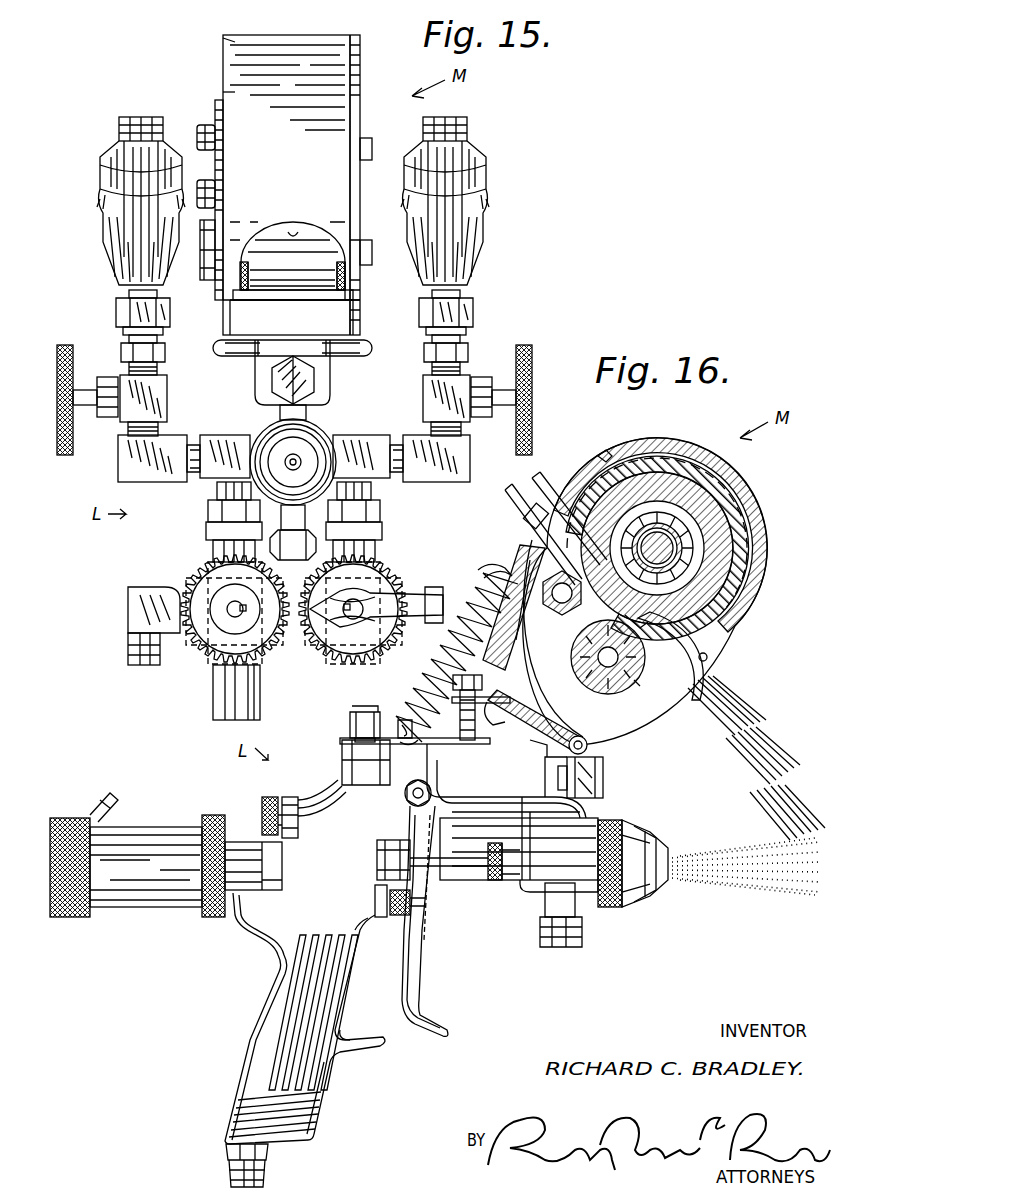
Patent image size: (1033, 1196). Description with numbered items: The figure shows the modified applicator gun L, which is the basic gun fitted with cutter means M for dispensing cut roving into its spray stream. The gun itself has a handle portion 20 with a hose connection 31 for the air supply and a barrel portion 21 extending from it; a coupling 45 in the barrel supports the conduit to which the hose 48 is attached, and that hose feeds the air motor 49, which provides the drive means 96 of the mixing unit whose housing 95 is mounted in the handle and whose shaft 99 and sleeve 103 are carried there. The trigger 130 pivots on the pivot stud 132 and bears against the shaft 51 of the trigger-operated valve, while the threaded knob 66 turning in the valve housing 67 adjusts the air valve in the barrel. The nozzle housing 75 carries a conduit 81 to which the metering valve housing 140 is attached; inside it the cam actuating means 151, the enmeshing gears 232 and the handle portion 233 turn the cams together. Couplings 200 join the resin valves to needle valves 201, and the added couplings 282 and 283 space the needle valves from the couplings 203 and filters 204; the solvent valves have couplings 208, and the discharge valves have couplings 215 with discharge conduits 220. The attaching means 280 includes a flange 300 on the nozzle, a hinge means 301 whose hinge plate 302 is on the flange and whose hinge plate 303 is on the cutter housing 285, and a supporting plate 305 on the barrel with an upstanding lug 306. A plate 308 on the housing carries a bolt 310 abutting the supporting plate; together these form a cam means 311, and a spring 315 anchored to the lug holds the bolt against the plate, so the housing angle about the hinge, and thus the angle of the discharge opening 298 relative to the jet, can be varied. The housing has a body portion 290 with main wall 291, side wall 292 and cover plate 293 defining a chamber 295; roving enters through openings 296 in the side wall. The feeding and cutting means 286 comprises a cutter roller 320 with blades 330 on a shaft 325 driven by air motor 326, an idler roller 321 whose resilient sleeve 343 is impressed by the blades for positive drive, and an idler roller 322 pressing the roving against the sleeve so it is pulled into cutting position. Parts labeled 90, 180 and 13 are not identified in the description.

In FIG. 15, the housing 285 is at (213, 70).
In FIG. 16, the housing 285 is at (668, 434).
In FIG. 15, the side wall 292 is at (220, 48).
In FIG. 16, the side wall 292 is at (600, 446).
In FIG. 15, the body portion 290 is at (222, 90).
In FIG. 16, the body portion 290 is at (762, 500).
In FIG. 15, the cover plate 293 is at (360, 60).
In FIG. 16, the cover plate 293 is at (712, 470).
In FIG. 15, the air motor 326 is at (224, 232).
In FIG. 15, the discharge opening 298 is at (293, 233).
In FIG. 16, the discharge opening 298 is at (702, 672).
In FIG. 15, the cutter roller 320 is at (278, 308).
In FIG. 16, the cutter roller 320 is at (613, 705).
In FIG. 15, the blades 330 is at (312, 296).
In FIG. 16, the blades 330 is at (620, 692).
In FIG. 15, the feeding and cutting means 286 is at (340, 300).
In FIG. 16, the feeding and cutting means 286 is at (744, 609).
In FIG. 15, the hinge means 301 is at (219, 329).
In FIG. 16, the hinge means 301 is at (636, 750).
In FIG. 15, the filters 204 is at (100, 200).
In FIG. 15, the couplings 203 is at (116, 312).
In FIG. 15, the needle valve 201 is at (124, 378).
In FIG. 15, the attaching means 280 is at (226, 381).
In FIG. 16, the attaching means 280 is at (548, 778).
In FIG. 15, the hinge plate 302 is at (316, 383).
In FIG. 16, the hinge plate 302 is at (604, 768).
In FIG. 15, the coupling 282 is at (250, 436).
In FIG. 15, the coupling 283 is at (356, 440).
In FIG. 15, the pressure gauge / spray nozzle 90 is at (312, 432).
In FIG. 16, the pressure gauge / spray nozzle 90 is at (648, 840).
In FIG. 15, the coupling 200 is at (207, 512).
In FIG. 15, the center fitting nut 180 is at (320, 540).
In FIG. 15, the cam actuating means 151 is at (175, 559).
In FIG. 15, the gear 232 is at (202, 660).
In FIG. 15, the housing 140 is at (294, 647).
In FIG. 15, the handle portion 233 is at (428, 590).
In FIG. 15, the coupling 215 is at (128, 602).
In FIG. 15, the discharge conduits 220 is at (128, 648).
In FIG. 15, the coupling 208 is at (252, 690).
In FIG. 16, the chamber 295 is at (758, 544).
In FIG. 16, the resilient sleeve 343 is at (700, 630).
In FIG. 16, the idler roller 321 is at (656, 630).
In FIG. 16, the openings 296 is at (548, 530).
In FIG. 16, the idler roller 322 is at (568, 626).
In FIG. 16, the main wall 291 is at (560, 662).
In FIG. 16, the cam means 311 is at (496, 682).
In FIG. 16, the shaft 325 is at (588, 684).
In FIG. 16, the hinge plate 303 is at (552, 725).
In FIG. 16, the plate 308 is at (508, 720).
In FIG. 16, the bolt 310 is at (468, 676).
In FIG. 16, the supporting plate 305 is at (466, 748).
In FIG. 16, the hose 48 is at (350, 724).
In FIG. 16, the lug 306 is at (400, 718).
In FIG. 16, the spring 315 is at (486, 564).
In FIG. 16, the housing 75 is at (590, 812).
In FIG. 16, the spray gun 13 is at (255, 976).
In FIG. 16, the flange 300 is at (602, 784).
In FIG. 16, the conduit 81 is at (541, 932).
In FIG. 16, the shaft 99 is at (462, 866).
In FIG. 16, the sleeve 103 is at (376, 858).
In FIG. 16, the shaft 51 is at (376, 900).
In FIG. 16, the pivot stud 132 is at (405, 793).
In FIG. 16, the trigger 130 is at (426, 960).
In FIG. 16, the handle portion 20 is at (256, 1045).
In FIG. 16, the hose connection 31 is at (228, 1168).
In FIG. 16, the drive means 96 is at (156, 812).
In FIG. 16, the air motor 49 is at (152, 906).
In FIG. 16, the housing 95 is at (282, 870).
In FIG. 16, the threaded knob 66 is at (262, 806).
In FIG. 16, the valve housing 67 is at (296, 790).
In FIG. 16, the barrel portion 21 is at (330, 780).
In FIG. 16, the coupling 45 is at (362, 786).